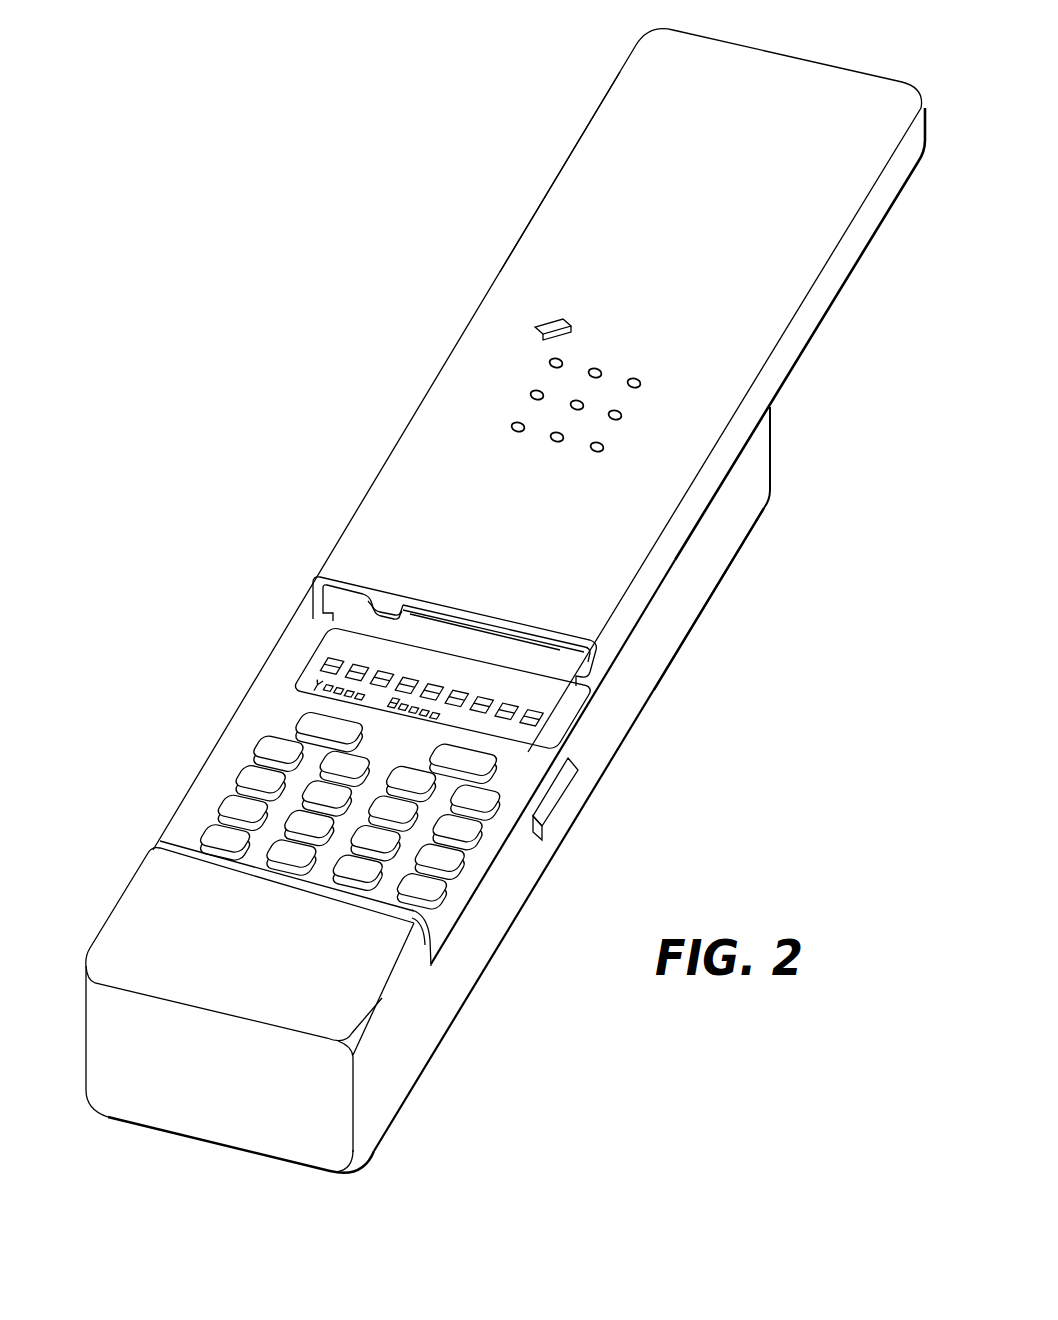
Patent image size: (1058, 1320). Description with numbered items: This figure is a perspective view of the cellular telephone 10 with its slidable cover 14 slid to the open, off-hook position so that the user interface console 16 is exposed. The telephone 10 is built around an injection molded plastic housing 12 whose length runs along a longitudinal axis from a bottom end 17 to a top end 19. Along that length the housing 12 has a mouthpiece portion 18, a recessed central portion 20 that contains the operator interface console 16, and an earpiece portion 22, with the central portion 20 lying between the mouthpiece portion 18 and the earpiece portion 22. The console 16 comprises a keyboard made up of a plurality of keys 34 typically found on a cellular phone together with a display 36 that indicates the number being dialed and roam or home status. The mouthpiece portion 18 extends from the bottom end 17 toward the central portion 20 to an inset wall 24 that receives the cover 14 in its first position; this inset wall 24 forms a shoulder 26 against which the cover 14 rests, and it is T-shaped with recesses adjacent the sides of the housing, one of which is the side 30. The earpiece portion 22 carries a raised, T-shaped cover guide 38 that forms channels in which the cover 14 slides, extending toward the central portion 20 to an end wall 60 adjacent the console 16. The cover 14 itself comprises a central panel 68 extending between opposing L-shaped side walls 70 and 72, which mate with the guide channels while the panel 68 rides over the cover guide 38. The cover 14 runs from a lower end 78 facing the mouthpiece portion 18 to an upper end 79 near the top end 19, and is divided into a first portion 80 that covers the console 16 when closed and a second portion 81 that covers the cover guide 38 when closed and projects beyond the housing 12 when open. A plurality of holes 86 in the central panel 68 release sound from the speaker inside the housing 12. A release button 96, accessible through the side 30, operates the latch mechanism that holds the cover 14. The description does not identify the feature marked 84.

The cellular telephone 10 is at (330, 348).
The housing 12 is at (718, 597).
The slidable cover 14 is at (593, 106).
The user interface console 16 is at (358, 807).
The bottom end 17 is at (145, 1077).
The mouthpiece portion 18 is at (103, 913).
The top end 19 is at (772, 453).
The recessed central portion 20 is at (541, 876).
The earpiece portion 22 is at (684, 652).
The inset wall 24 is at (190, 848).
The shoulder 26 is at (157, 842).
The side 30 is at (478, 924).
The keys 34 is at (261, 783).
The display 36 is at (434, 687).
The cover guide 38 is at (445, 625).
The end wall 60 is at (442, 688).
The central panel 68 is at (628, 190).
The L-shaped side wall 70 is at (833, 283).
The L-shaped side wall 72 is at (516, 240).
The lower end 78 is at (343, 590).
The upper end 79 is at (749, 47).
The first portion 80 is at (316, 574).
The second portion 81 is at (565, 205).
The notch 84 is at (374, 604).
The holes 86 is at (562, 361).
The release button 96 is at (560, 790).